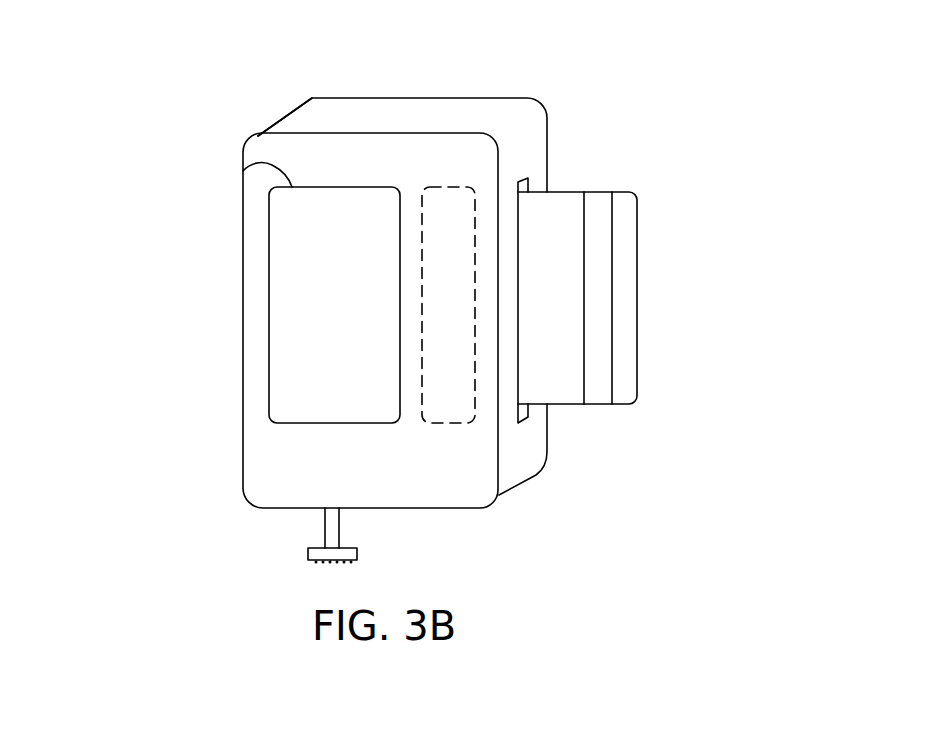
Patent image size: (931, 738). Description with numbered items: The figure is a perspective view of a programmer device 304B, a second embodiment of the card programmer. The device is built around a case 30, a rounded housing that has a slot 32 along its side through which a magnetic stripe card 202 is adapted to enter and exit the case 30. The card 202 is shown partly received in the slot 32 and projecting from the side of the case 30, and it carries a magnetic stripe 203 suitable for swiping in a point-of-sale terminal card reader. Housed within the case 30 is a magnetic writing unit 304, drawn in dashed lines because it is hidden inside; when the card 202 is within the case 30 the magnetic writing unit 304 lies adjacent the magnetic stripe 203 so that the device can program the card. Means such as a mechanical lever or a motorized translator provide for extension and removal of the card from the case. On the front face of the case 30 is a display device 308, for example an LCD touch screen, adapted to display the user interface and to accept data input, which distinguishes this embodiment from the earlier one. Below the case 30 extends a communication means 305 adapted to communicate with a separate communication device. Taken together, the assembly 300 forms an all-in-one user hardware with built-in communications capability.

The electronic device assembly 300 is at (412, 67).
The case 30 is at (492, 98).
The programmer device 304B is at (333, 97).
The display device 308 is at (243, 171).
The magnetic writing unit 304 is at (465, 425).
The slot 32 is at (522, 181).
The magnetic stripe card 202 is at (628, 217).
The magnetic stripe 203 is at (598, 396).
The communication means 305 is at (323, 527).